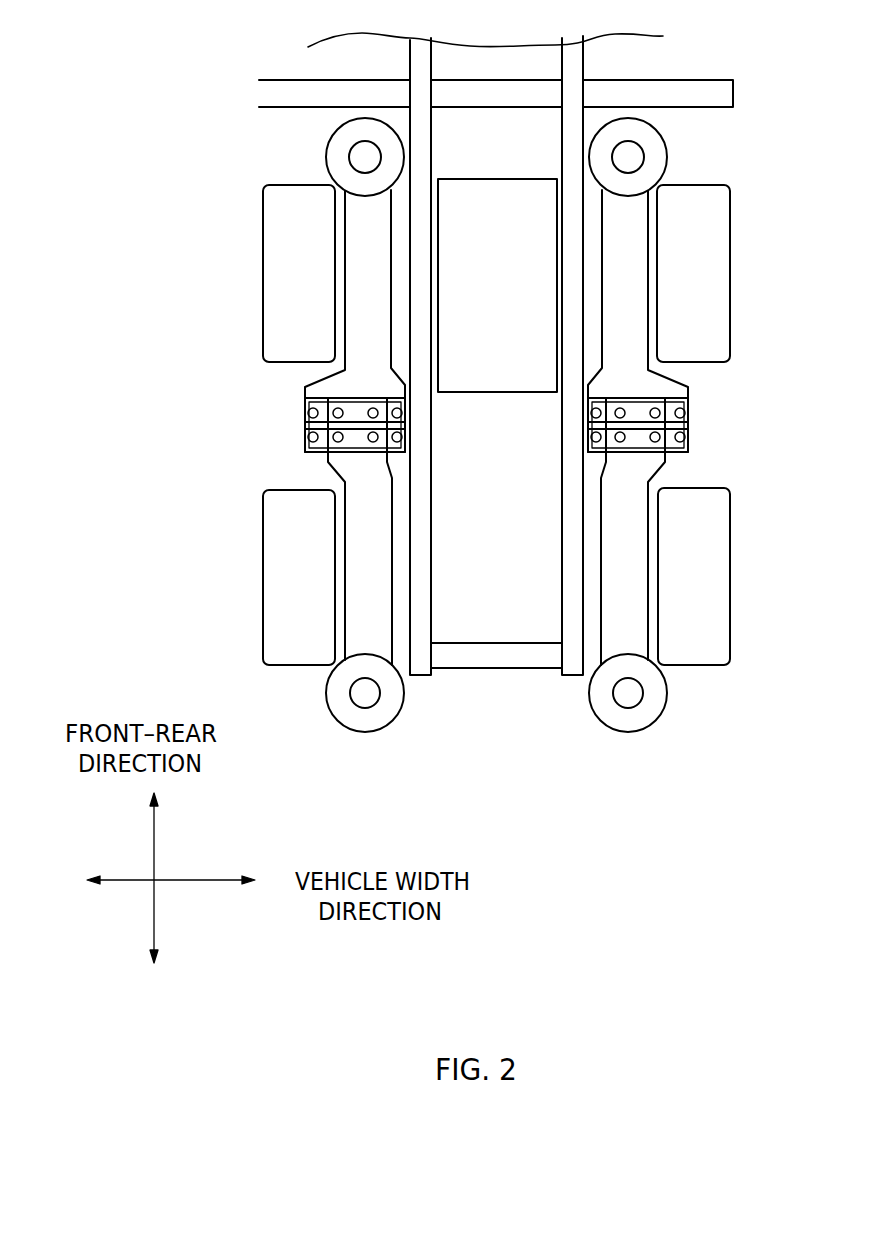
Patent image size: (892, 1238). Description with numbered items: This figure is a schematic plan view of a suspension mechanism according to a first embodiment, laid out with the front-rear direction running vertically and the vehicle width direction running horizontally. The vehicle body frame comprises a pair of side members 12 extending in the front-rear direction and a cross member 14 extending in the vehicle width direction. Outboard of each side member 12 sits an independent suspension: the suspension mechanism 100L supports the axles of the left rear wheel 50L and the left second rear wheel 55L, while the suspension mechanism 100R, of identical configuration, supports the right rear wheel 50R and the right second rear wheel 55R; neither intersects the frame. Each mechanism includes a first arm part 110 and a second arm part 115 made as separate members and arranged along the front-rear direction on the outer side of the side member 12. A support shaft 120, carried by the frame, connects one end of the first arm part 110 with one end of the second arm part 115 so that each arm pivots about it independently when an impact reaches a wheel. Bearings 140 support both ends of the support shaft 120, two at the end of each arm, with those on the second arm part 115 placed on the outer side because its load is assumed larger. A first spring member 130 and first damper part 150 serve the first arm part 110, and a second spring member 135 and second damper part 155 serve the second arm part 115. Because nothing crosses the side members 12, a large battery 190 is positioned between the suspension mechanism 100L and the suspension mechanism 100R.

The side member 12 is at (433, 507).
The cross member 14 is at (492, 96).
The battery 190 is at (502, 395).
The second spring member 135 is at (332, 137).
The second damper part 155 is at (349, 158).
The second arm part 115 is at (345, 217).
The support shaft 120 is at (305, 434).
The first arm part 110 is at (330, 468).
The bearings 140 is at (338, 407).
The first spring member 130 is at (393, 702).
The first damper part 150 is at (351, 693).
The left second rear wheel 55L is at (270, 261).
The right second rear wheel 55R is at (724, 268).
The left rear wheel 50L is at (272, 572).
The right rear wheel 50R is at (724, 574).
The left suspension mechanism 100L is at (365, 745).
The right suspension mechanism 100R is at (626, 745).